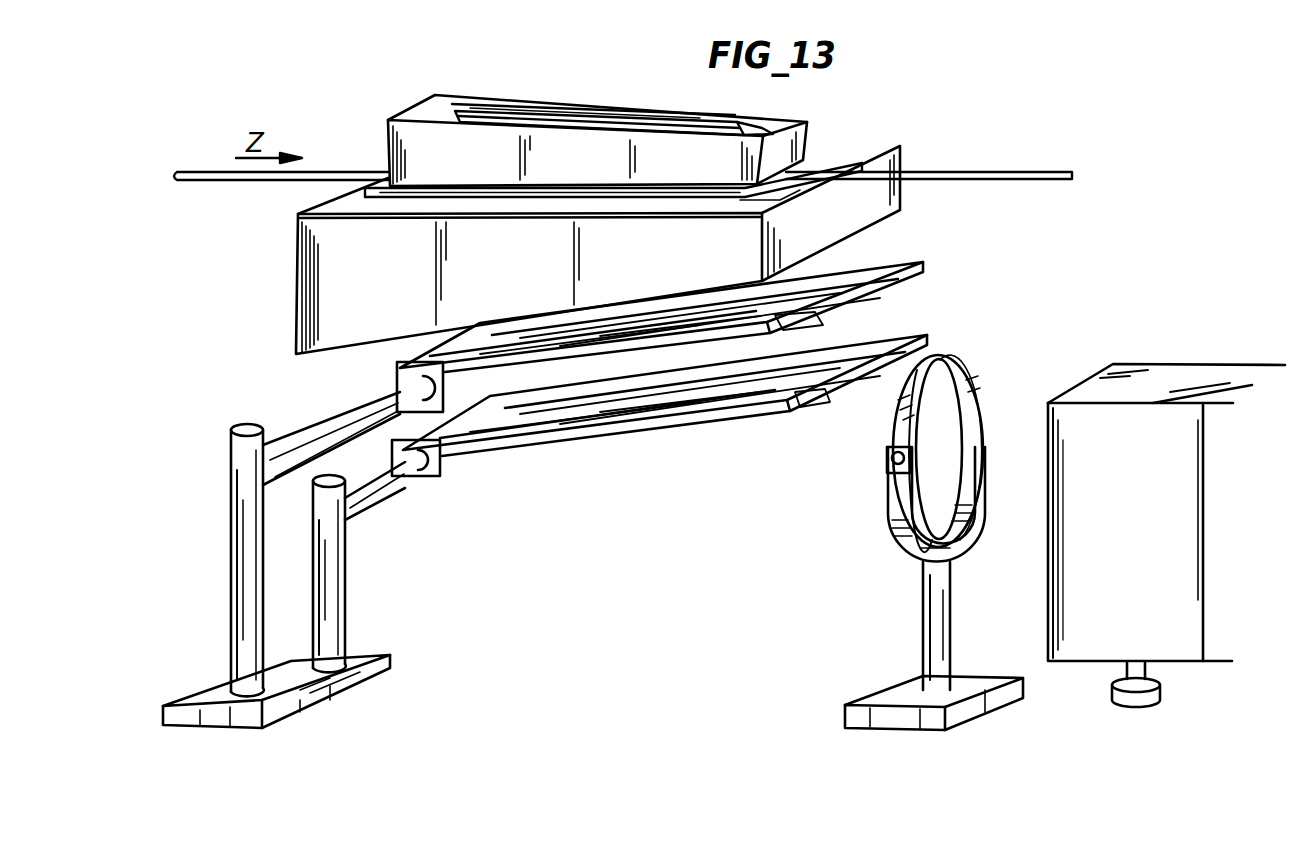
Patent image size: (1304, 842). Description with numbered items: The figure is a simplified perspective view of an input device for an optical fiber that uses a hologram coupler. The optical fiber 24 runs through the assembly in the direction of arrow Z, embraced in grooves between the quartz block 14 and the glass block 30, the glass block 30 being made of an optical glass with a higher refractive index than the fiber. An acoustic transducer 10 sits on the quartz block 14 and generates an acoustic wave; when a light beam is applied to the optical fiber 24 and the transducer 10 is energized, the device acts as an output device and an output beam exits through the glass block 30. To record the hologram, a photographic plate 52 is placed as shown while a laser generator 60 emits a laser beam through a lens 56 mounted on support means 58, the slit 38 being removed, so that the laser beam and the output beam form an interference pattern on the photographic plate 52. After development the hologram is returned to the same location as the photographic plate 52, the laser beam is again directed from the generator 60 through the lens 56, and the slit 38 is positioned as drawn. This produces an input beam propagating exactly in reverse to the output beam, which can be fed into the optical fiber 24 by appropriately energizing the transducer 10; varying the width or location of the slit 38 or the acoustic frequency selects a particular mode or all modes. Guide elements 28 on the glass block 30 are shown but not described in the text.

The acoustic transducer 10 is at (622, 117).
The quartz block 14 is at (408, 152).
The optical fiber 24 is at (926, 170).
The guide rails 28 is at (832, 160).
The glass block 30 is at (320, 299).
The slit 38 is at (878, 264).
The photographic plate 52 is at (632, 432).
The lens 56 is at (888, 483).
The support means 58 is at (921, 627).
The laser generator 60 is at (1070, 537).